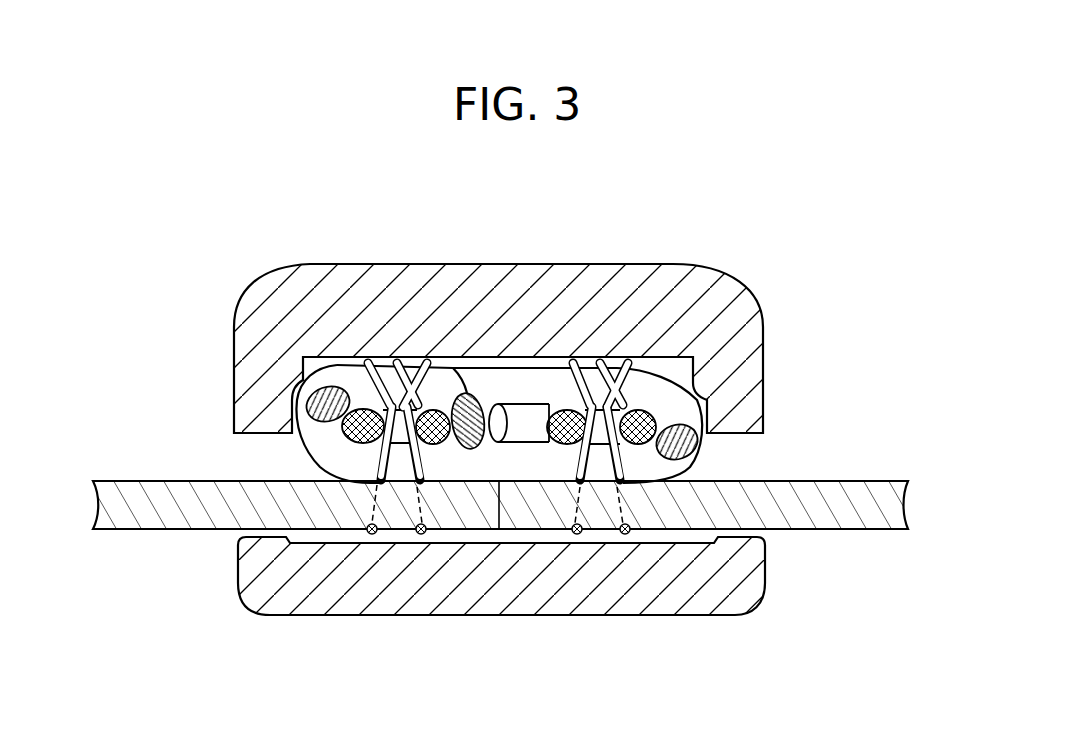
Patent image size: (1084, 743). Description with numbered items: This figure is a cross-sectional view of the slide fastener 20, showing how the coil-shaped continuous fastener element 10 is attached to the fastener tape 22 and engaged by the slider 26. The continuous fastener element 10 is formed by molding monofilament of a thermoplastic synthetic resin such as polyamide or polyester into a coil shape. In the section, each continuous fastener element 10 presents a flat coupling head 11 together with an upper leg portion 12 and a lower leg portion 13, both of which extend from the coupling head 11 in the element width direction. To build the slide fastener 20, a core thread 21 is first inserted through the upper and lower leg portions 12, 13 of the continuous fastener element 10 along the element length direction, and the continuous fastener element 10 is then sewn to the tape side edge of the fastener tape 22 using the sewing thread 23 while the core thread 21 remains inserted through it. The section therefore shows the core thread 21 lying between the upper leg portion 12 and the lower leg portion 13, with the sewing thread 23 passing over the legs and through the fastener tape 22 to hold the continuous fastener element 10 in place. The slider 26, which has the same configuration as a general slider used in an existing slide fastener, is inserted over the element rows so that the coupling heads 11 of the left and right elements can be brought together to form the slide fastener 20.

The continuous fastener element 10 is at (323, 449).
The coupling head 11 is at (474, 390).
The upper leg portion 12 is at (538, 372).
The lower leg portion 13 is at (643, 465).
The slide fastener 20 is at (382, 223).
The core thread 21 is at (358, 404).
The fastener tape 22 is at (165, 507).
The sewing thread 23 is at (372, 534).
The slider 26 is at (740, 279).